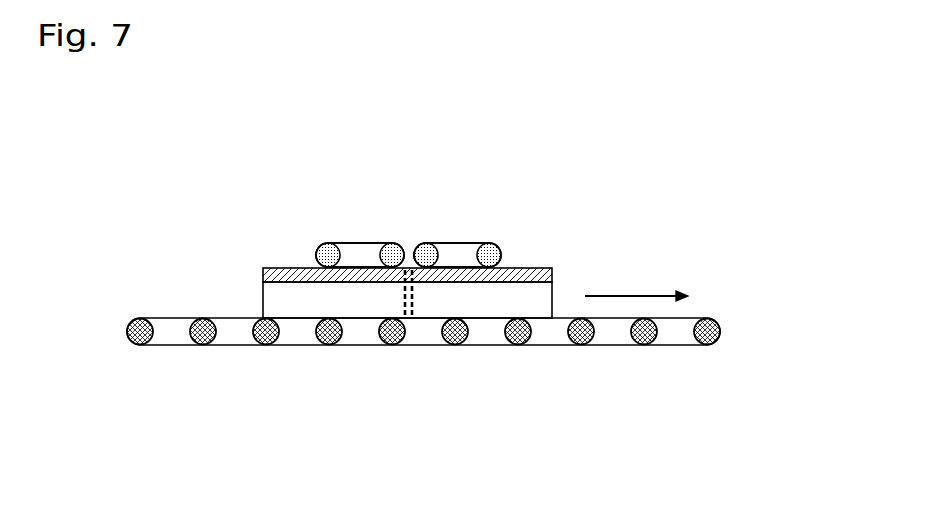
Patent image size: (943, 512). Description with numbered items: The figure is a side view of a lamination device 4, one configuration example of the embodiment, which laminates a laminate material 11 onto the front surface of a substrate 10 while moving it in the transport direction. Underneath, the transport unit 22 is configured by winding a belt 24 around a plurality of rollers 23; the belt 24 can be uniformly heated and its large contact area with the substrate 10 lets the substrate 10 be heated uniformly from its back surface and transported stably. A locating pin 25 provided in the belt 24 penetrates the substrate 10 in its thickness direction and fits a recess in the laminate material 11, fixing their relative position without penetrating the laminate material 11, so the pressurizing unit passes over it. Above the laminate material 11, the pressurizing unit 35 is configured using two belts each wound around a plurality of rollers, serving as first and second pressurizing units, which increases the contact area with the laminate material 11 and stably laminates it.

The lamination device 4 is at (648, 168).
The substrate 10 is at (262, 298).
The laminate material 11 is at (262, 273).
The transport unit 22 is at (633, 382).
The rollers 23 is at (135, 345).
The belt 24 is at (297, 345).
The locating pin 25 is at (413, 300).
The pressurizing unit 35 is at (413, 188).